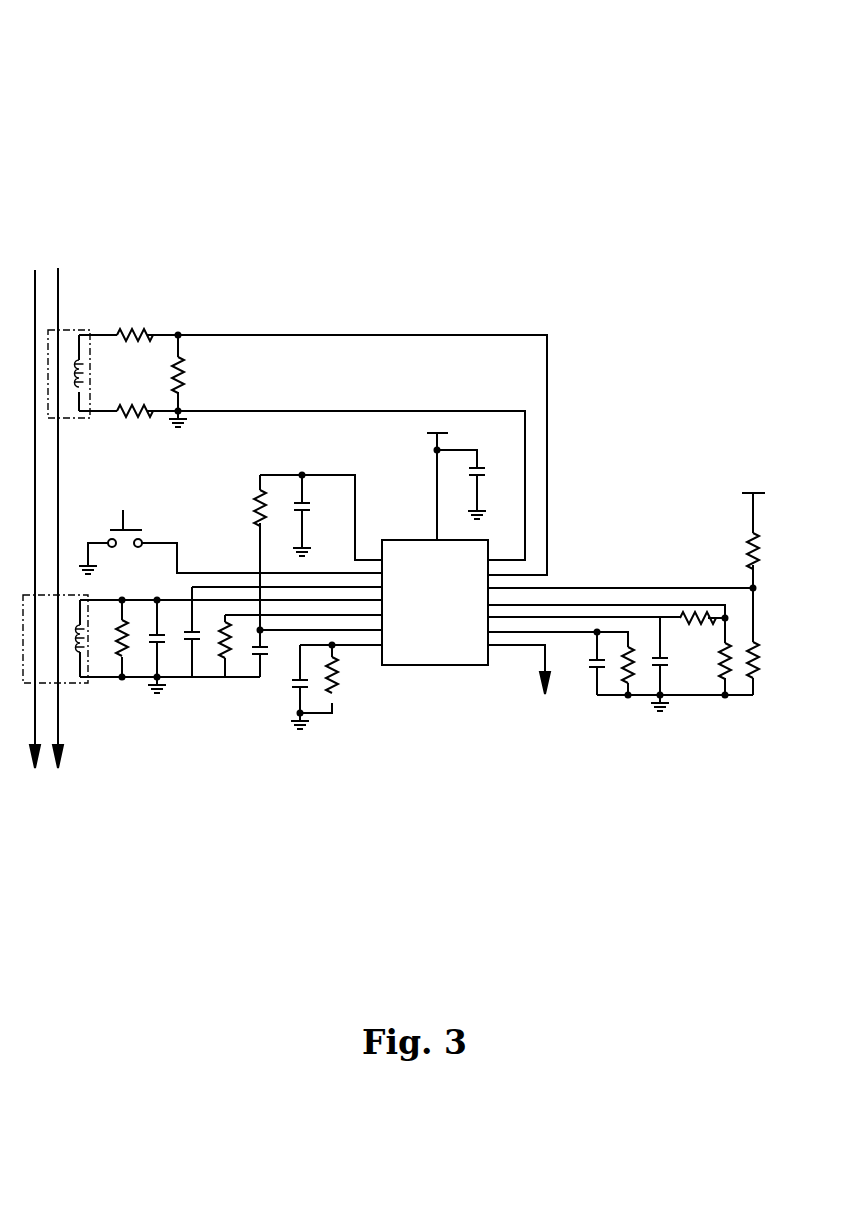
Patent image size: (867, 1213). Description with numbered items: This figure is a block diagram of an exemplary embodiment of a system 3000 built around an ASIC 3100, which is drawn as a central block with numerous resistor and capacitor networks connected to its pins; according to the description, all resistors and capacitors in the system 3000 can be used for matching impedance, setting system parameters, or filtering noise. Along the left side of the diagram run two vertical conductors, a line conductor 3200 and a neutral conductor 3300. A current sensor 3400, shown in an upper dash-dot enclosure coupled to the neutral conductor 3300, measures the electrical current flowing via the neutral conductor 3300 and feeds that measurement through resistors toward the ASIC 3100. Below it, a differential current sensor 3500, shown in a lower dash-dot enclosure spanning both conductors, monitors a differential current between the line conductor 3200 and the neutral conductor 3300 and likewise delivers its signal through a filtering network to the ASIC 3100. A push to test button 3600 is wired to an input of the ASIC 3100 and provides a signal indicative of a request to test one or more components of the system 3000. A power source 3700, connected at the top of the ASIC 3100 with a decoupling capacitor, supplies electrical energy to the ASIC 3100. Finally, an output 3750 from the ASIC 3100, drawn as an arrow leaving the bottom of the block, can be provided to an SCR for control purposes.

The system 3000 is at (110, 32).
The ASIC 3100 is at (435, 602).
The line conductor 3200 is at (40, 272).
The neutral conductor 3300 is at (60, 292).
The current sensor 3400 is at (90, 333).
The differential current sensor 3500 is at (75, 685).
The push to test button 3600 is at (230, 529).
The power source 3700 is at (427, 480).
The output 3750 is at (530, 684).